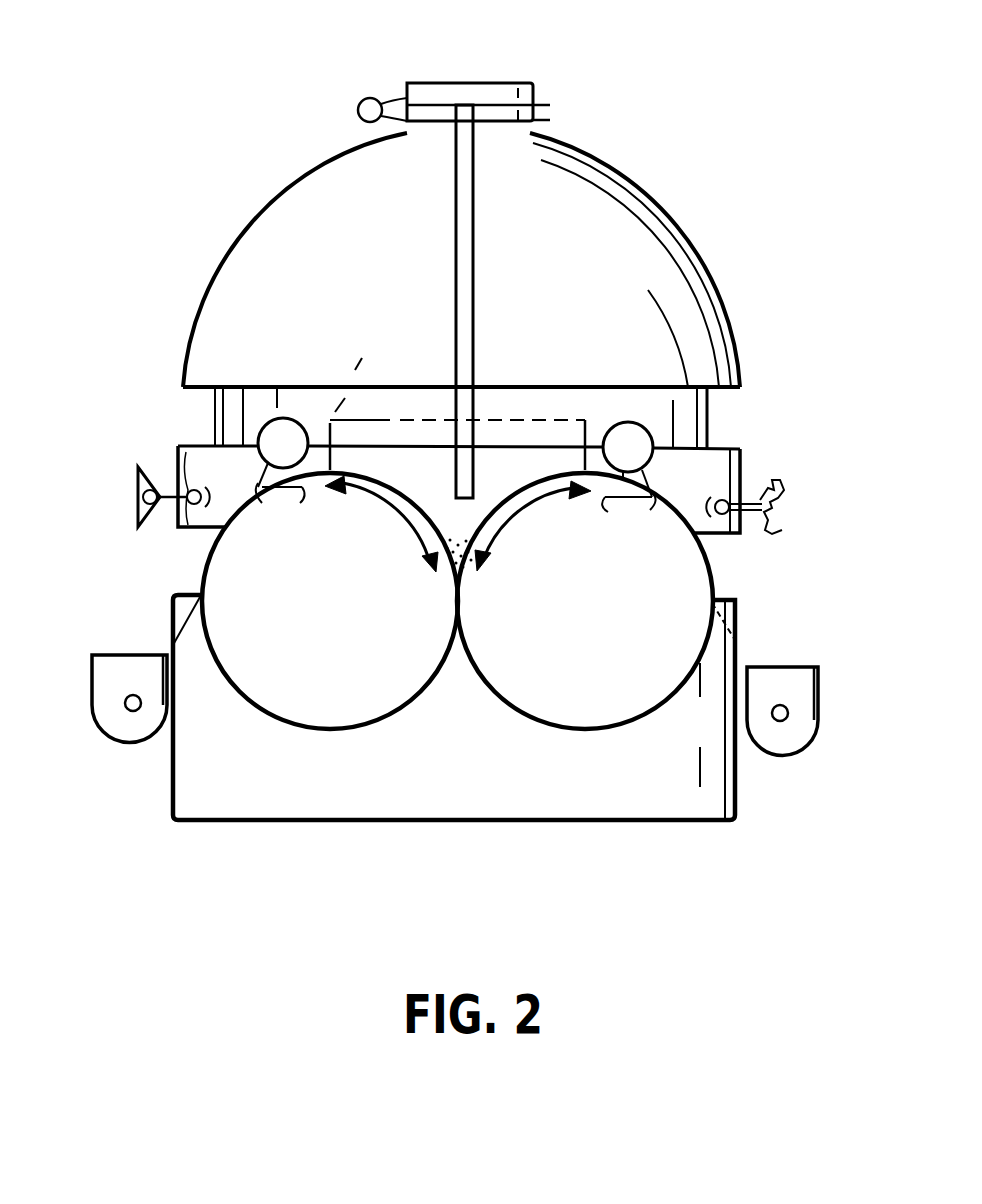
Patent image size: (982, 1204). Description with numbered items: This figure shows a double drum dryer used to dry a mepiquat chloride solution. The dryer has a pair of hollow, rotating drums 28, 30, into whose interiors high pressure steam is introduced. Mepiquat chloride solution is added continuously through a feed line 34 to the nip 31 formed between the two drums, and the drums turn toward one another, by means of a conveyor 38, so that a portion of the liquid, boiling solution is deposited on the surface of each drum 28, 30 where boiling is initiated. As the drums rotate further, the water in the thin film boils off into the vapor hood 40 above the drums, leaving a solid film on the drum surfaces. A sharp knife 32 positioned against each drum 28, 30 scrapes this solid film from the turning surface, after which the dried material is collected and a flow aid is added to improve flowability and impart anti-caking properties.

The feed line 34 is at (552, 98).
The vapor hood 40 is at (369, 294).
The knife 32 is at (195, 443).
The drum 28 is at (363, 698).
The drum 30 is at (663, 673).
The nip 31 is at (456, 622).
The conveyor 38 is at (102, 698).